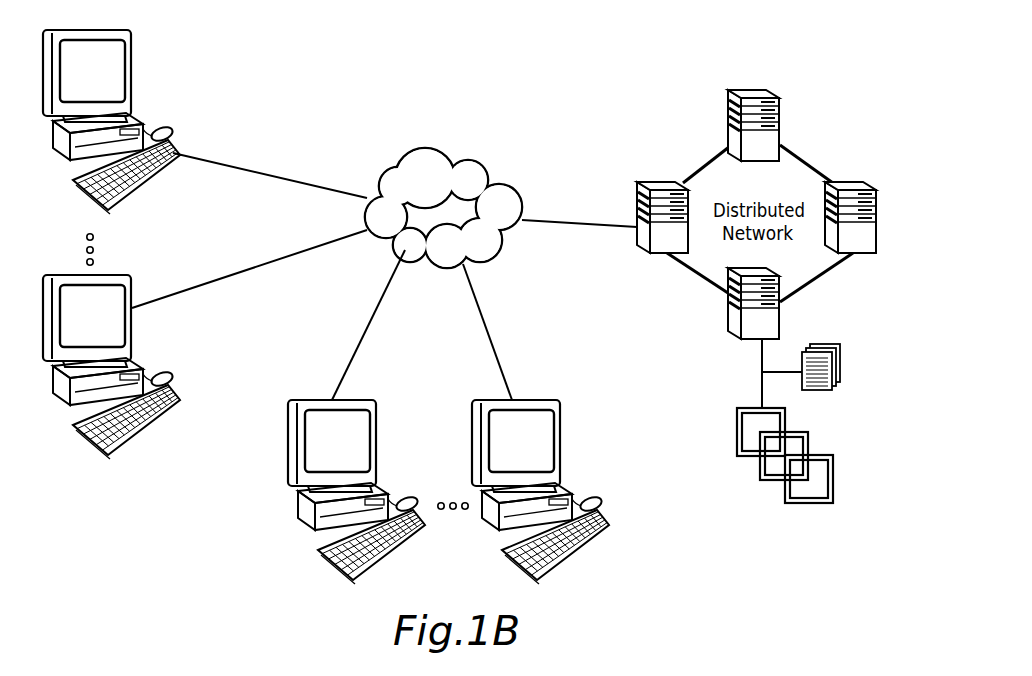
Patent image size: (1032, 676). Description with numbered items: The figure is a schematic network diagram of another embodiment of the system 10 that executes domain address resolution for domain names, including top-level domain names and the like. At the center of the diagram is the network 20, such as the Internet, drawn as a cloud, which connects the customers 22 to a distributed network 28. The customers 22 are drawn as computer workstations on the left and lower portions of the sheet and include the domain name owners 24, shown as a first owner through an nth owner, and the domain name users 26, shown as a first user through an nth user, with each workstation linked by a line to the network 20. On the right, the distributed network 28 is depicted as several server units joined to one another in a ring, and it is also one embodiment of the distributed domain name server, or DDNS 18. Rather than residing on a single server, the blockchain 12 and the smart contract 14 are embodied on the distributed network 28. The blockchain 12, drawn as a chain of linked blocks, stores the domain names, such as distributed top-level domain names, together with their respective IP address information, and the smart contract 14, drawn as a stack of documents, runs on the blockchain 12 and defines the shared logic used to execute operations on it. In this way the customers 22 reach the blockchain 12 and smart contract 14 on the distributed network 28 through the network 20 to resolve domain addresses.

The system 10 is at (516, 104).
The blockchain 12 is at (836, 479).
The smart contract 14 is at (842, 355).
The distributed domain name server (DDNS) 18 is at (655, 182).
The network 20 is at (427, 148).
The customers 22 is at (198, 450).
The domain name owners 24 is at (455, 542).
The domain name users 26 is at (135, 224).
The distributed network 28 is at (752, 90).